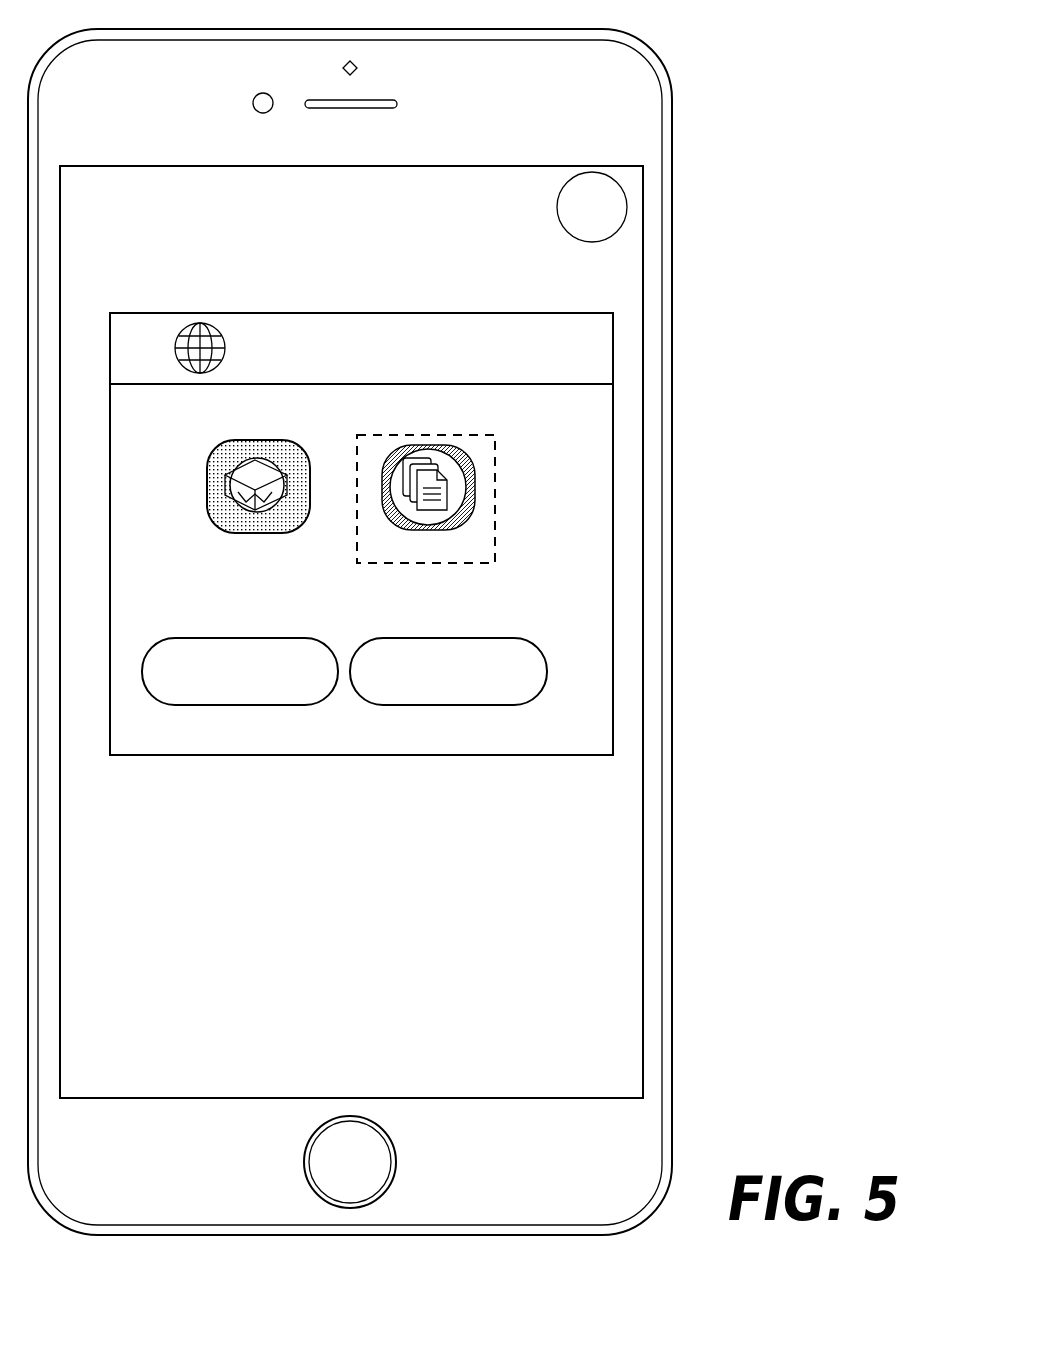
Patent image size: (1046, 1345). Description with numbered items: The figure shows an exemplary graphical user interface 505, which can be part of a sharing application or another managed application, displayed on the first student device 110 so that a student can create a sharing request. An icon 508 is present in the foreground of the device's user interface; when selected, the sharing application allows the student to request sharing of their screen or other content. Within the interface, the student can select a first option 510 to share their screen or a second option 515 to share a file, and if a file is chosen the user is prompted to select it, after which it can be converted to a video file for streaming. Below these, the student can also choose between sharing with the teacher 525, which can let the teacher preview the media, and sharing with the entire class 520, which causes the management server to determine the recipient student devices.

The first student device 110 is at (665, 66).
The graphical user interface 505 is at (377, 296).
The icon 508 is at (557, 228).
The first option 510 is at (208, 473).
The second option 515 is at (475, 461).
The first option to stream media to the entire class 520 is at (452, 705).
The sharing with the teacher 525 is at (227, 705).